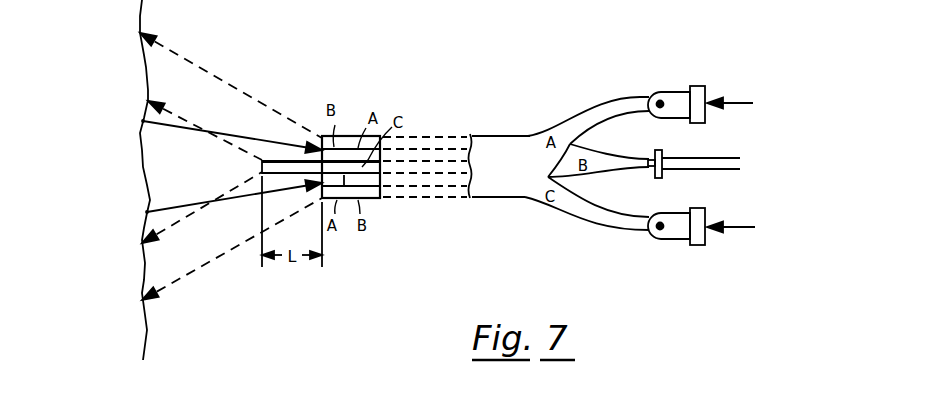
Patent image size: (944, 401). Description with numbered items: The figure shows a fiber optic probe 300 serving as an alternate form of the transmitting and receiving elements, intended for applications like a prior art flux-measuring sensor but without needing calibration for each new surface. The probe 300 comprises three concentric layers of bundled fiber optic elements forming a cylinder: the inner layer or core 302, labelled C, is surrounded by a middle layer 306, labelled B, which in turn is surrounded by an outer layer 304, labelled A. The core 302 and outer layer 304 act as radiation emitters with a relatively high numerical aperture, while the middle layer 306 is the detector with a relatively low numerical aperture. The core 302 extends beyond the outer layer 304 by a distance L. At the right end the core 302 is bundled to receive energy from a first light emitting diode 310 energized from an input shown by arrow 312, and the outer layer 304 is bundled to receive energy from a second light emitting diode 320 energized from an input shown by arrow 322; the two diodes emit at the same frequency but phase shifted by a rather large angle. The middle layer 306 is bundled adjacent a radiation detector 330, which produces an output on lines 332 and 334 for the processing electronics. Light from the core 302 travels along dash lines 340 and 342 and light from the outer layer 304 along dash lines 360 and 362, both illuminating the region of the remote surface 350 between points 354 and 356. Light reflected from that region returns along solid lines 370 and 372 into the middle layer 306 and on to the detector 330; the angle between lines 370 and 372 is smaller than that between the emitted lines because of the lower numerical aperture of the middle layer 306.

The fiber optic probe 300 is at (396, 132).
The inner layer or core 302 is at (321, 212).
The outer layer 304 is at (372, 190).
The middle layer 306 is at (389, 231).
The first light emitting diode 310 is at (677, 240).
The input arrow 312 is at (745, 228).
The second light emitting diode 320 is at (673, 91).
The input arrow 322 is at (744, 102).
The radiation detector 330 is at (681, 154).
The output line 332 is at (733, 152).
The output line 334 is at (726, 170).
The dash line 340 is at (167, 107).
The dash line 342 is at (165, 232).
The remote surface 350 is at (102, 180).
The point 354 is at (102, 132).
The point 356 is at (104, 225).
The dash line 360 is at (200, 68).
The dash line 362 is at (187, 277).
The solid line 370 is at (232, 133).
The solid line 372 is at (234, 205).